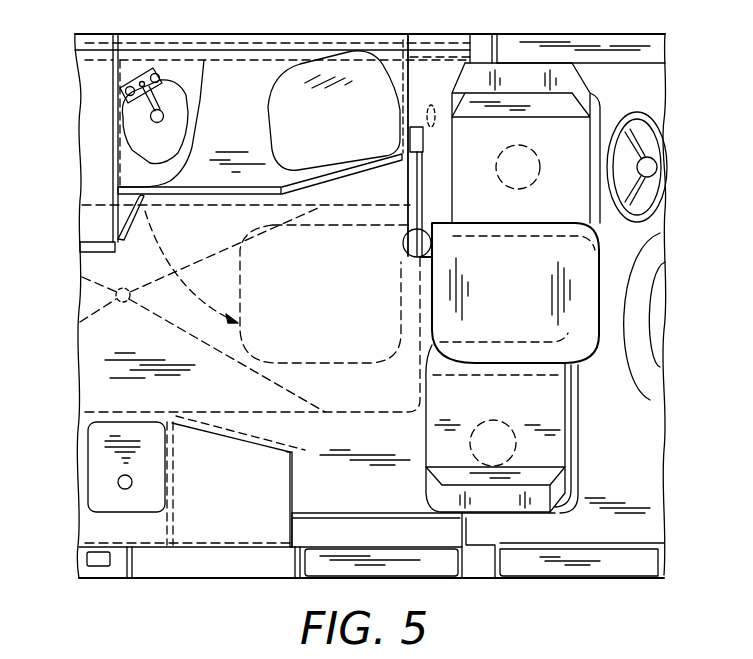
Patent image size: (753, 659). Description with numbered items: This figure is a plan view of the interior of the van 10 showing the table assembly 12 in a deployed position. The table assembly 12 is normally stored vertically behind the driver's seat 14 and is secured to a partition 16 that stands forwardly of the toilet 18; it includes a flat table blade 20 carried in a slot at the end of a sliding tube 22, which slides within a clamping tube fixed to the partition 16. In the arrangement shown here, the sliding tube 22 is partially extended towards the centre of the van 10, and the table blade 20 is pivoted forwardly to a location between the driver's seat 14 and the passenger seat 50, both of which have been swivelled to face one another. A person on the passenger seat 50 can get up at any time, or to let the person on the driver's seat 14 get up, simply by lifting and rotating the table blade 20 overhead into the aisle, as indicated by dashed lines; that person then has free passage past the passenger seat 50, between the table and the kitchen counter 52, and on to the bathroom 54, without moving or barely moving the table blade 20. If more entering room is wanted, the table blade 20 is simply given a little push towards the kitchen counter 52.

The van 10 is at (62, 228).
The table assembly 12 is at (431, 193).
The driver's seat 14 is at (572, 216).
The partition 16 is at (407, 100).
The toilet 18 is at (326, 136).
The table blade 20 is at (330, 311).
The sliding tube 22 is at (416, 183).
The passenger seat 50 is at (511, 409).
The kitchen counter 52 is at (243, 509).
The bathroom 54 is at (245, 145).